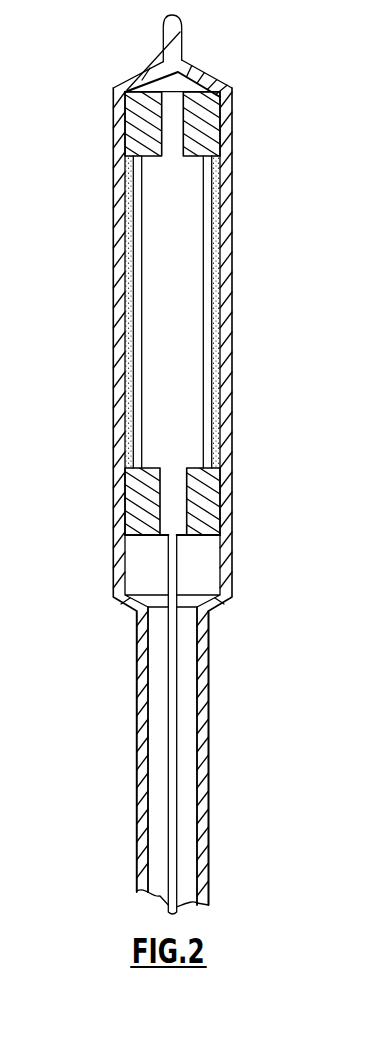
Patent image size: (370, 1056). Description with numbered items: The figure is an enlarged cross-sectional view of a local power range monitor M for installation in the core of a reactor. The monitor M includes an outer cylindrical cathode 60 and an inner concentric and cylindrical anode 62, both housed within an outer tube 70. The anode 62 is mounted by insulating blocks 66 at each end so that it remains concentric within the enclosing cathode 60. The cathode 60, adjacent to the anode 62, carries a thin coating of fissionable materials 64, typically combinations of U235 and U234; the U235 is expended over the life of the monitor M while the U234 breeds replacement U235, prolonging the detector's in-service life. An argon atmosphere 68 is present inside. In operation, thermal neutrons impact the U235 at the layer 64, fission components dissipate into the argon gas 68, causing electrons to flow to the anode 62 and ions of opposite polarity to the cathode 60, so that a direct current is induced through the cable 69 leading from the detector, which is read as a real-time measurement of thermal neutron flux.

The outer cylindrical cathode 60 is at (233, 208).
The inner cylindrical anode 62 is at (178, 376).
The coating of fissionable materials 64 is at (134, 284).
The insulating blocks 66 is at (212, 125).
The argon atmosphere 68 is at (130, 210).
The cable 69 is at (177, 663).
The outer tube 70 is at (208, 698).
The local power range monitor M is at (233, 298).